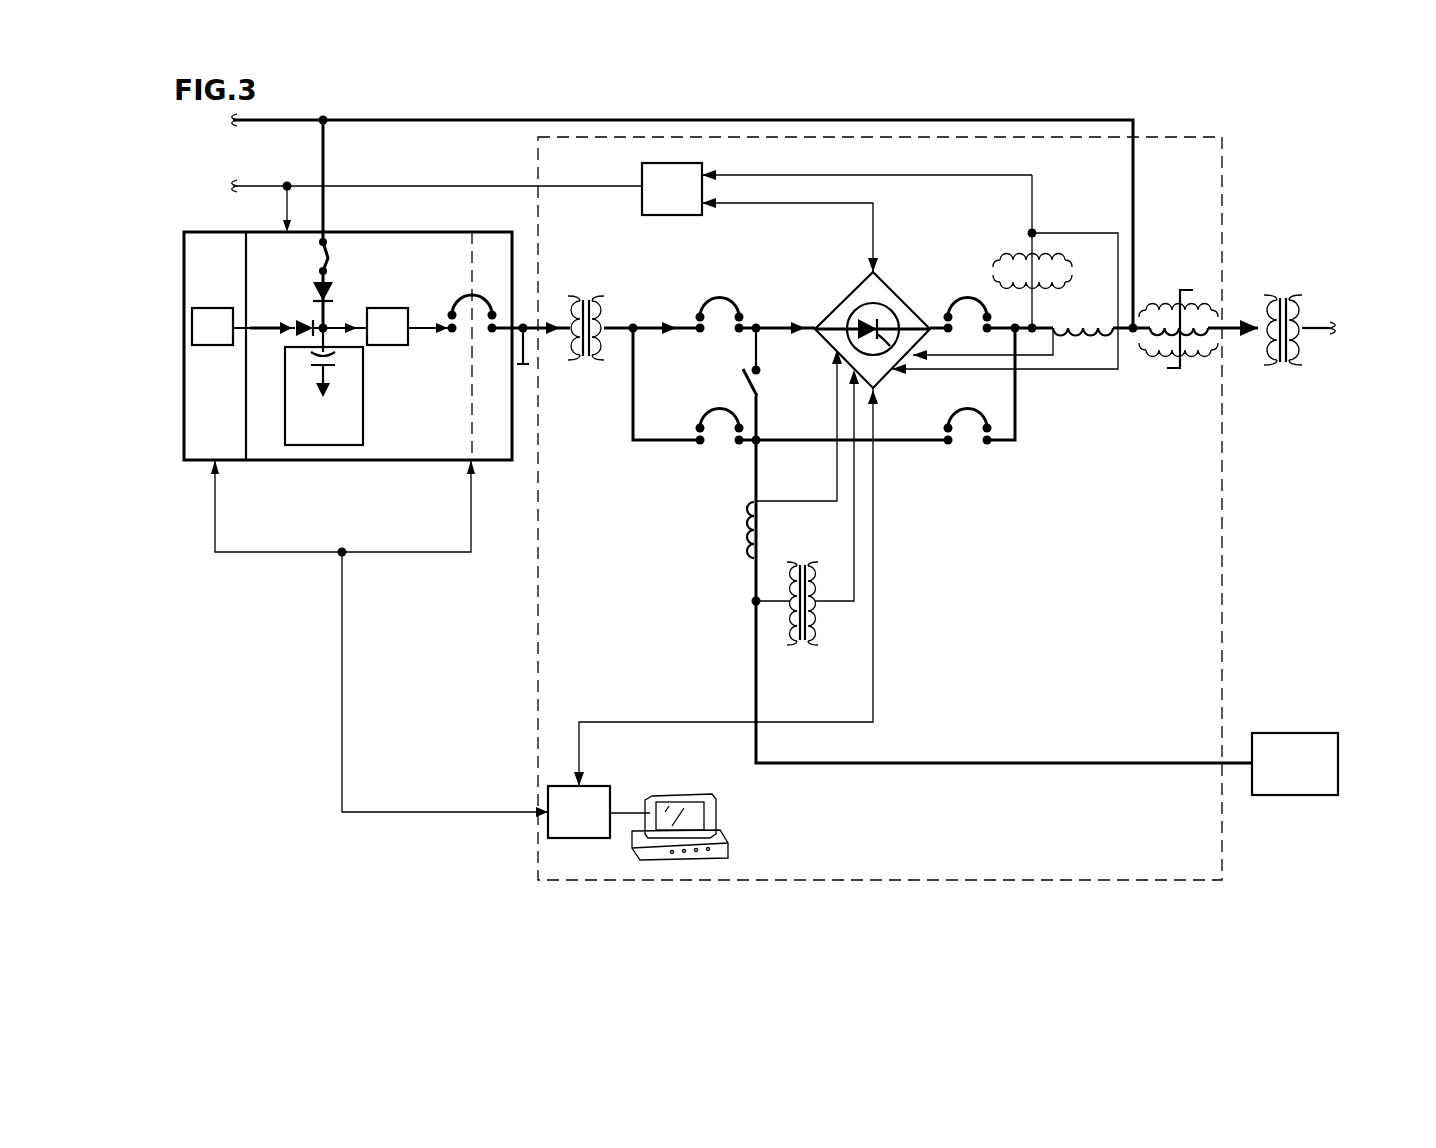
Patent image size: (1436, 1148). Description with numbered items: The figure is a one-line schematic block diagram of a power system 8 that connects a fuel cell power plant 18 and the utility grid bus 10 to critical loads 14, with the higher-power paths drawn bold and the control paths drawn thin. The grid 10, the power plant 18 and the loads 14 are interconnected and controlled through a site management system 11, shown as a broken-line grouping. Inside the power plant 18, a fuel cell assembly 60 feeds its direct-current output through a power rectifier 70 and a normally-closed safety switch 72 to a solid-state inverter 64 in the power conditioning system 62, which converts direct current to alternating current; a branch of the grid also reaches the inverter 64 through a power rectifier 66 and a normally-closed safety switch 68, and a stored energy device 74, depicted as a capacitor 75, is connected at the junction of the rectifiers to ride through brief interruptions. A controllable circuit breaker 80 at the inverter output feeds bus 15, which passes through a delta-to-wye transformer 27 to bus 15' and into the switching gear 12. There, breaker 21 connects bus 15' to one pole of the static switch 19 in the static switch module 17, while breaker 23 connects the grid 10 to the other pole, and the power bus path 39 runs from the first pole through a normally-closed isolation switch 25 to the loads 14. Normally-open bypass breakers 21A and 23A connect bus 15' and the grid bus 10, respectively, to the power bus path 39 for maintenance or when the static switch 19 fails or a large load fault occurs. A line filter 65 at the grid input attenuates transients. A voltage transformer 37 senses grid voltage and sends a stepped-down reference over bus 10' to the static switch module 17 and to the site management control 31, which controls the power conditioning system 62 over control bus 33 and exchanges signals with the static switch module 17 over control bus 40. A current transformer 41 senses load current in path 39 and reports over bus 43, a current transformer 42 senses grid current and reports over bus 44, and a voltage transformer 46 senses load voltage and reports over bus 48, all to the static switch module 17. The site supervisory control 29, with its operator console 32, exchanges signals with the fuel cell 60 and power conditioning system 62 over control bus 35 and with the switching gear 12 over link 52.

The power system 8 is at (238, 695).
The utility grid bus 10 is at (1303, 320).
The grid voltage reference bus 10' is at (913, 273).
The site management system 11 is at (520, 160).
The switching gear 12 is at (614, 490).
The critical loads 14 is at (1298, 738).
The bus 15 is at (525, 314).
The power bus 15' is at (652, 354).
The static switch module 17 is at (835, 290).
The fuel cell power plant 18 is at (366, 232).
The static switch 19 is at (852, 316).
The breaker switch 21 is at (718, 298).
The bypass breaker switch 21A is at (722, 407).
The breaker switch 23 is at (972, 306).
The bypass breaker switch 23A is at (970, 407).
The isolation switch 25 is at (761, 372).
The delta-to-wye transformer 27 is at (584, 288).
The site supervisory control 29 is at (596, 786).
The site management control 31 is at (642, 180).
The operator console 32 is at (685, 797).
The control bus 33 is at (389, 185).
The control bus 35 is at (378, 552).
The voltage transformer 37 is at (1010, 258).
The power bus path 39 is at (757, 420).
The control bus 40 is at (744, 203).
The current transformer 41 is at (747, 518).
The current transformer 42 is at (1085, 322).
The bus 43 is at (778, 501).
The bus 44 is at (995, 356).
The voltage transformer 46 is at (802, 645).
The bus 48 is at (853, 556).
The communication link 52 is at (874, 643).
The fuel cell assembly 60 is at (221, 308).
The power conditioning system 62 is at (464, 260).
The solid-state inverter 64 is at (398, 308).
The line filter 65 is at (1172, 276).
The power rectifier 66 is at (330, 296).
The safety switch 68 is at (316, 262).
The power rectifier 70 is at (308, 318).
The safety switch 72 is at (270, 336).
The stored energy device 74 is at (363, 405).
The capacitor 75 is at (337, 366).
The controllable circuit breaker 80 is at (466, 298).